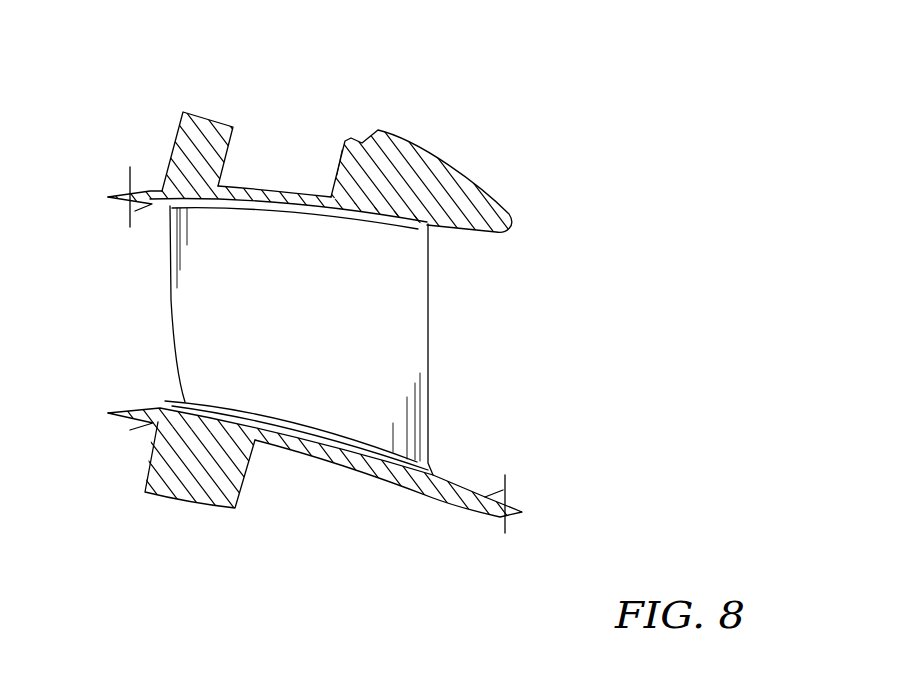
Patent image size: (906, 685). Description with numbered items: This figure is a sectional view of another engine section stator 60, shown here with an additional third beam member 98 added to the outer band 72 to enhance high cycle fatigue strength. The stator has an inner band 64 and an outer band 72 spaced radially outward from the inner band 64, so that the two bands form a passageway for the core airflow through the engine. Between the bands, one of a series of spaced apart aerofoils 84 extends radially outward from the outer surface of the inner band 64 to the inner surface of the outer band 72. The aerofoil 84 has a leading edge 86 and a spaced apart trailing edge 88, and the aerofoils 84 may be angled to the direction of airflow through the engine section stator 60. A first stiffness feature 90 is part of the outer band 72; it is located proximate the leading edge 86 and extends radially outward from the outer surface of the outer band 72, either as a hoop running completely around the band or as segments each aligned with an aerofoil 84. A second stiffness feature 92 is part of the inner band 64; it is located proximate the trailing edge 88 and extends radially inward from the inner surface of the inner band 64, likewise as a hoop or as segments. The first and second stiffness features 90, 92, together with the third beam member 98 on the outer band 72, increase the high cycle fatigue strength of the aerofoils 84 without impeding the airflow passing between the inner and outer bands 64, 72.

The engine section stator 60 is at (528, 108).
The inner band 64 is at (360, 465).
The outer band 72 is at (252, 192).
The aerofoil 84 is at (390, 307).
The leading edge 86 is at (430, 360).
The trailing edge 88 is at (172, 320).
The first stiffness feature 90 is at (445, 185).
The second stiffness feature 92 is at (192, 485).
The outer forward flange 98 is at (200, 137).